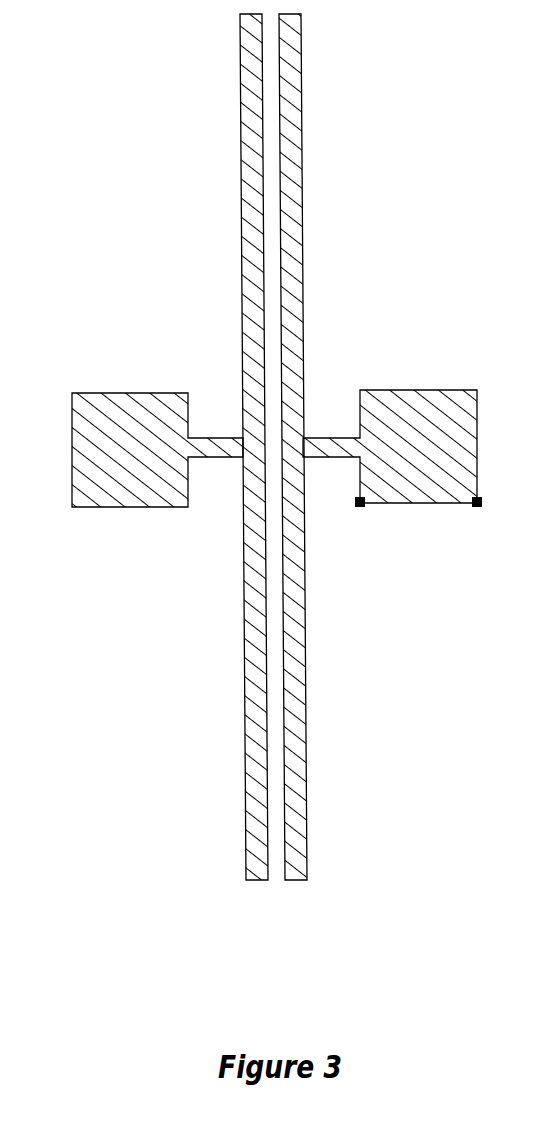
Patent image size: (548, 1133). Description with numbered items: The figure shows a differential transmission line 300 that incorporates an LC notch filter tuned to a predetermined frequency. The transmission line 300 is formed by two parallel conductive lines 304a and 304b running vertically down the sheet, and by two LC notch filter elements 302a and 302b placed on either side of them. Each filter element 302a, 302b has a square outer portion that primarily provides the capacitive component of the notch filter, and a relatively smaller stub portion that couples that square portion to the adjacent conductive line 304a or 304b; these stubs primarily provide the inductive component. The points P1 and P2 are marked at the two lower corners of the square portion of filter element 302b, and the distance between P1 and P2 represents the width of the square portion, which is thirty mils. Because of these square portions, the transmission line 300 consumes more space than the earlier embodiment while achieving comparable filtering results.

The transmission line 300 is at (265, 447).
The LC notch filter element 302a is at (115, 388).
The LC notch filter element 302b is at (400, 384).
The conductive line 304a is at (232, 227).
The conductive line 304b is at (308, 218).
The point P1 is at (358, 520).
The point P2 is at (480, 520).